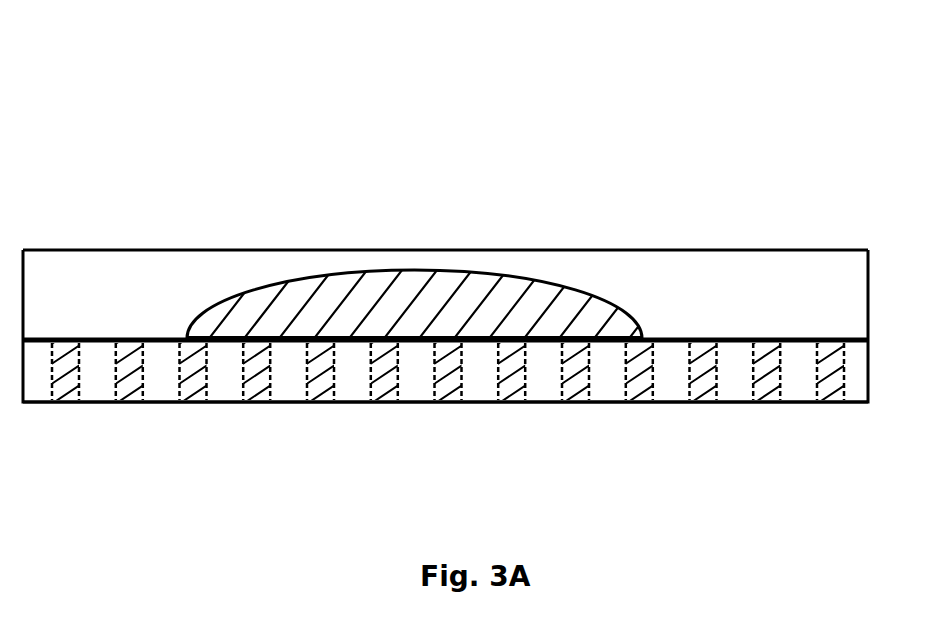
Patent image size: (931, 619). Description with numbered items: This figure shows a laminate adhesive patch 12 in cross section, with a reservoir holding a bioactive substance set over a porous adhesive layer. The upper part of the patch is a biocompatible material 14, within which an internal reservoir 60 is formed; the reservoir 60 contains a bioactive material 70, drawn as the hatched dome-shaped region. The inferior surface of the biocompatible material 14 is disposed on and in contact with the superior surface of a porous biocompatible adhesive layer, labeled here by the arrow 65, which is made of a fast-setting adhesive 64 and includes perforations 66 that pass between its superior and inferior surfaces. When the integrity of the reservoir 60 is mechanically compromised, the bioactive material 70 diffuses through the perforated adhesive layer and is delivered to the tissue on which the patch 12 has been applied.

The laminate adhesive patch 12 is at (516, 165).
The biocompatible material 14 is at (732, 273).
The internal reservoir 60 is at (342, 249).
The fast-setting adhesive 64 is at (480, 383).
The lower layer 65 is at (690, 434).
The perforations 66 is at (380, 392).
The bioactive material 70 is at (238, 330).